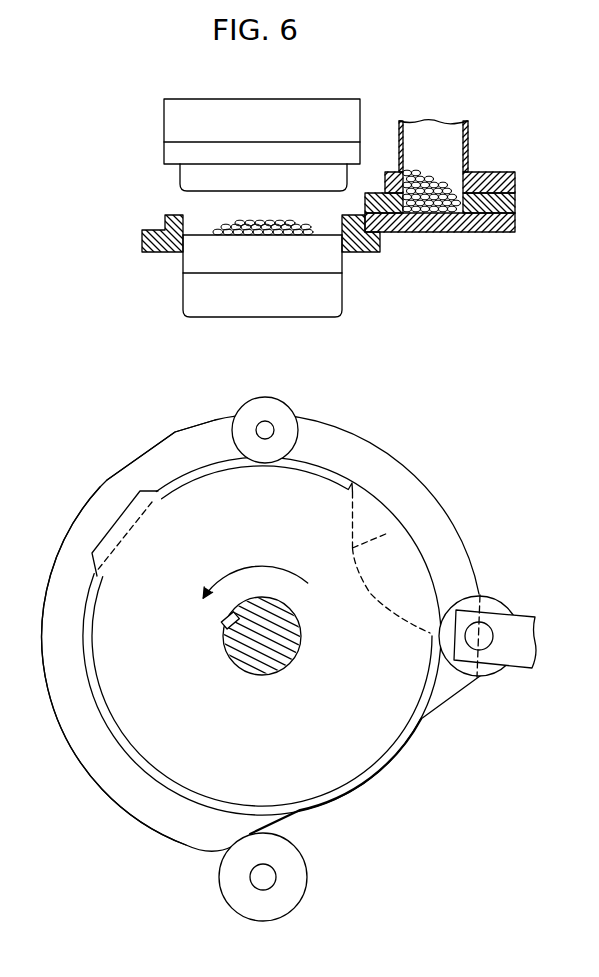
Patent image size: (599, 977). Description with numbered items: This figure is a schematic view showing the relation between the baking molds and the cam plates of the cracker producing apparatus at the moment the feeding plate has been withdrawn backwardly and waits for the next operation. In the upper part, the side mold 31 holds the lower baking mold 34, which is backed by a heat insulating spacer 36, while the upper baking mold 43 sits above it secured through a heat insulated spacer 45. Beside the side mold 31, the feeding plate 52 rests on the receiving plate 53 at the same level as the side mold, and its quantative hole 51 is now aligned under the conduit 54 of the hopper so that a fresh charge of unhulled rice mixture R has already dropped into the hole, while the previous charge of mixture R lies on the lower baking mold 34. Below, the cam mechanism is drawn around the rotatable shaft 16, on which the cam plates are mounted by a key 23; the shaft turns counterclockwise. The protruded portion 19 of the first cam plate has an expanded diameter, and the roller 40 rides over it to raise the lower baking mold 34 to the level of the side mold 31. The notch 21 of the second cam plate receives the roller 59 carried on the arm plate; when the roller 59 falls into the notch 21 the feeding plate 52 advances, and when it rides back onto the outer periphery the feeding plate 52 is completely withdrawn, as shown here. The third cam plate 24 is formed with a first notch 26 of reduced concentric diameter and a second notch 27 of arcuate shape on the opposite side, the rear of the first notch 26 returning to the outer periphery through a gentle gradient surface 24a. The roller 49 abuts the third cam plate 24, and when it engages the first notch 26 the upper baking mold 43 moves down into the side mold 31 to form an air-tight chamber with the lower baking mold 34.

The rotatable shaft 16 is at (290, 630).
The protruded portion 19 is at (113, 527).
The notch 21 is at (388, 533).
The key 23 is at (224, 620).
The third cam plate 24 is at (453, 533).
The gentle gradient surface 24a is at (138, 818).
The first notch 26 is at (413, 737).
The second notch 27 is at (150, 458).
The side mold 31 is at (170, 235).
The lower baking mold 34 is at (317, 247).
The heat insulating spacer 36 is at (336, 298).
The roller 40 is at (283, 412).
The upper baking mold 43 is at (252, 183).
The heat insulated spacer 45 is at (360, 113).
The roller 49 is at (299, 867).
The quantative hole 51 is at (410, 233).
The feeding plate 52 is at (516, 206).
The receiving plate 53 is at (455, 233).
The conduit 54 is at (468, 151).
The roller 59 is at (493, 603).
The unhulled rice mixture R is at (282, 225).